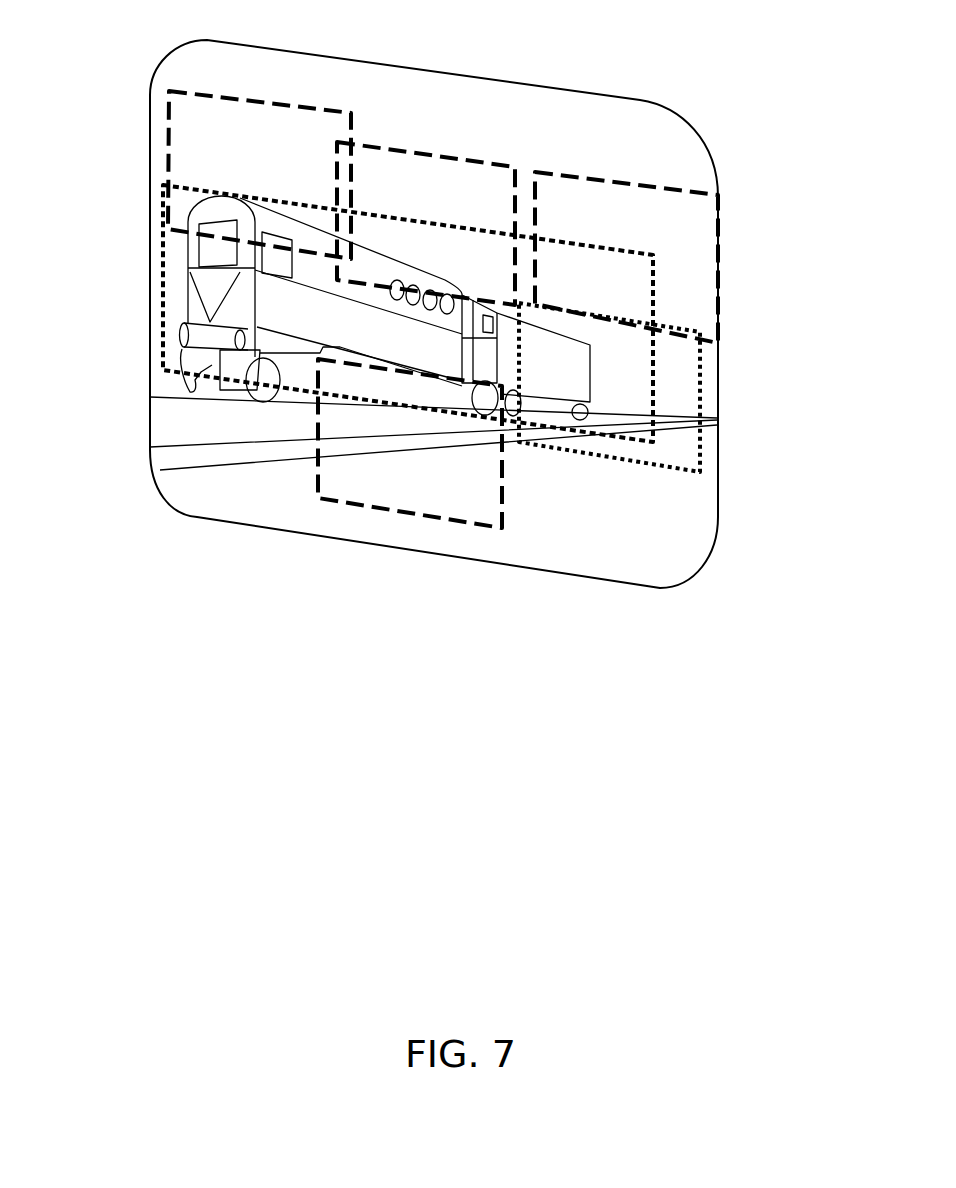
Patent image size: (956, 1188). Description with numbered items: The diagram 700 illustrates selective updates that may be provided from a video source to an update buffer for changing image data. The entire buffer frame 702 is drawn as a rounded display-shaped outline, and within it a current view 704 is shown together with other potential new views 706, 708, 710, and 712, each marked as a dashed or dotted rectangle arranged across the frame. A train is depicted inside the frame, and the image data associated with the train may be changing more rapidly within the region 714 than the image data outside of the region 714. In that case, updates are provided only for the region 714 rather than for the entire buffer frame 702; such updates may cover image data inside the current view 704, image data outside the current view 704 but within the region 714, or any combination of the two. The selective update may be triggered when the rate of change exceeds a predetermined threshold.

The diagram of selective updates 700 is at (484, 1020).
The entire buffer frame 702 is at (745, 95).
The current view 704 is at (593, 455).
The potential new view 706 is at (332, 500).
The potential new view 708 is at (620, 181).
The potential new view 710 is at (448, 157).
The potential new view 712 is at (273, 100).
The region 714 is at (162, 252).